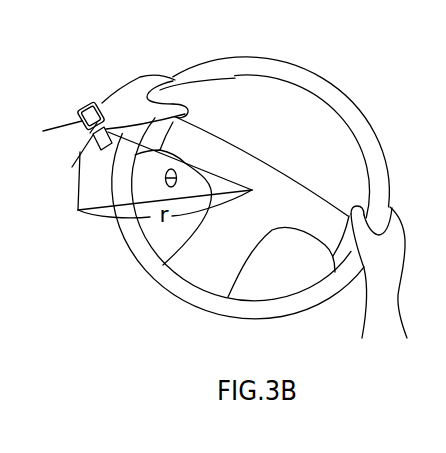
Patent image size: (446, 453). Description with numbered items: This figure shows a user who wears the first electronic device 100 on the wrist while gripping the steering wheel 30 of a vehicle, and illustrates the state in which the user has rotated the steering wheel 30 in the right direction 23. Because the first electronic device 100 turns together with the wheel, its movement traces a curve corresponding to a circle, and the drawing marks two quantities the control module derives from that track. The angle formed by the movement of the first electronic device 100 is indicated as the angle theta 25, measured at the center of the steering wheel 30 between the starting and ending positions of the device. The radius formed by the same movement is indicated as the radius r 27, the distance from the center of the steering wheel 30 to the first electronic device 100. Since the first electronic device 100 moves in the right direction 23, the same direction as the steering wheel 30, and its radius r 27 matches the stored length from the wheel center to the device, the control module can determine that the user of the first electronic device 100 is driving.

The first electronic device 100 is at (87, 106).
The steering wheel 30 is at (316, 73).
The angle θ 25 is at (215, 182).
The right direction 23 is at (78, 183).
The radius r 27 is at (108, 217).